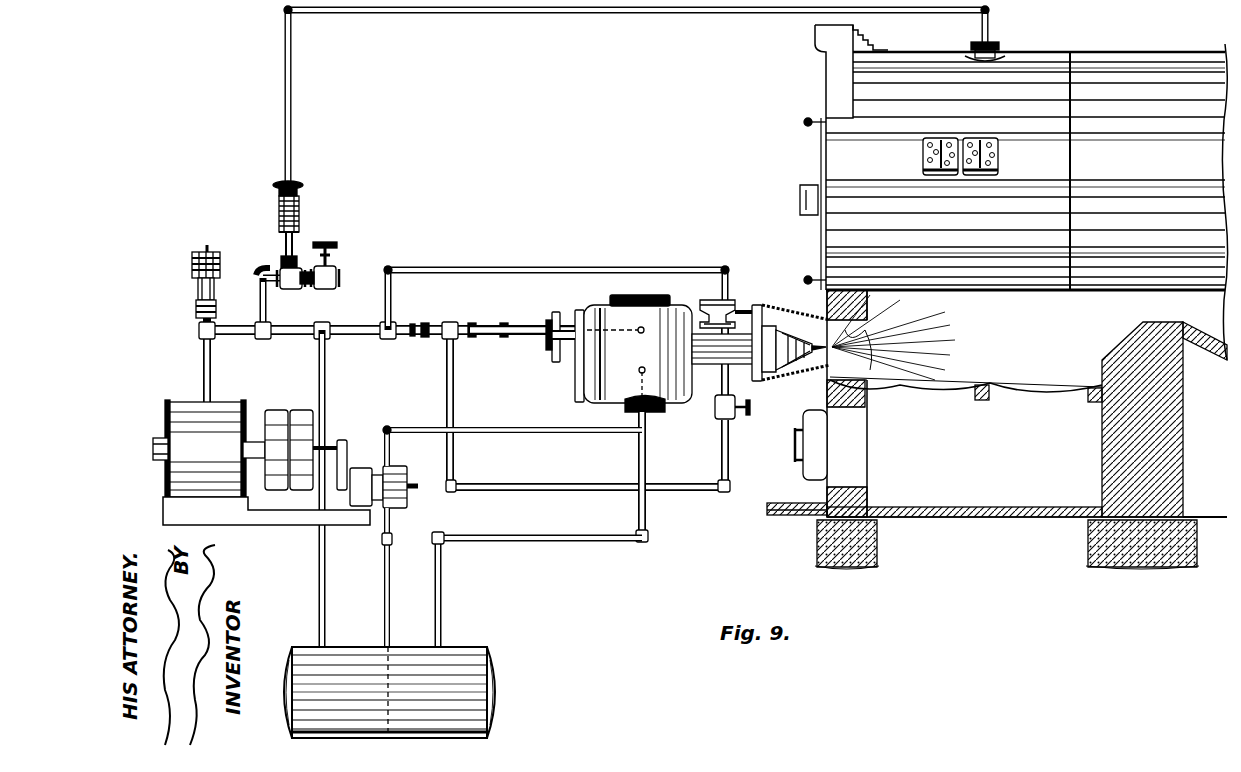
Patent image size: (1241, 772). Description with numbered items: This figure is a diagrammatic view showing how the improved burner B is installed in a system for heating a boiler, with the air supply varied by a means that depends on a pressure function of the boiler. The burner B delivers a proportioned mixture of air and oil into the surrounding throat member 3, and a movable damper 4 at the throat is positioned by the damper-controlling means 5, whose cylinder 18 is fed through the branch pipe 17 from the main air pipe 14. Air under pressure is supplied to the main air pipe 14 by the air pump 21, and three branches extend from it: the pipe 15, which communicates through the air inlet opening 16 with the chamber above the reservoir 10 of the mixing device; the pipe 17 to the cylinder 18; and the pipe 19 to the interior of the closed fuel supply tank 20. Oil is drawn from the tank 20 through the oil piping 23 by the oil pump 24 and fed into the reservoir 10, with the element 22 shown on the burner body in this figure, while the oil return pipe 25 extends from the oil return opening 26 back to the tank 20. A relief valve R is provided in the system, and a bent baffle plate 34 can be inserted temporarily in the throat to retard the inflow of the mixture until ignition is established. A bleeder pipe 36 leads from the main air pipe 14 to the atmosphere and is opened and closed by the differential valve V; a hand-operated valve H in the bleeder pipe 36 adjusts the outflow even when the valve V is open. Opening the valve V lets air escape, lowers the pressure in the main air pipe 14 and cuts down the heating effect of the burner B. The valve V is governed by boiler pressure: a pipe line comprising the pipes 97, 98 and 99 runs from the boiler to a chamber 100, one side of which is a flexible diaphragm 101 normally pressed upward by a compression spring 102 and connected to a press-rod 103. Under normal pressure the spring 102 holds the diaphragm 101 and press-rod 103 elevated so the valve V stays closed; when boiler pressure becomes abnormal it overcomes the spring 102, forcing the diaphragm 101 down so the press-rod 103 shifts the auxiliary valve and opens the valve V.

The throat member 3 is at (790, 385).
The damper 4 is at (744, 382).
The damper-controlling means 5 is at (645, 282).
The reservoir 10 is at (585, 355).
The main air pipe 14 is at (343, 322).
The pipe 15 is at (509, 326).
The air inlet opening 16 is at (640, 320).
The pipe 17 is at (393, 290).
The cylinder 18 is at (740, 298).
The pipe 19 is at (326, 366).
The fuel supply tank 20 is at (389, 692).
The air pump 21 is at (165, 483).
The burner oil passage 22 is at (640, 372).
The oil piping 23 is at (505, 430).
The oil pump 24 is at (396, 468).
The oil return pipe 25 is at (558, 538).
The oil return opening 26 is at (648, 412).
The bent baffle plate 34 is at (872, 363).
The bleeder pipe 36 is at (304, 284).
The pipe 97 is at (990, 30).
The pipe 98 is at (742, 10).
The pipe 99 is at (292, 48).
The chamber 100 is at (297, 183).
The flexible diaphragm 101 is at (297, 193).
The compression spring 102 is at (279, 205).
The press-rod 103 is at (296, 236).
The burner B is at (679, 293).
The hand-operated valve H is at (337, 268).
The relief valve R is at (194, 285).
The valve V is at (293, 289).